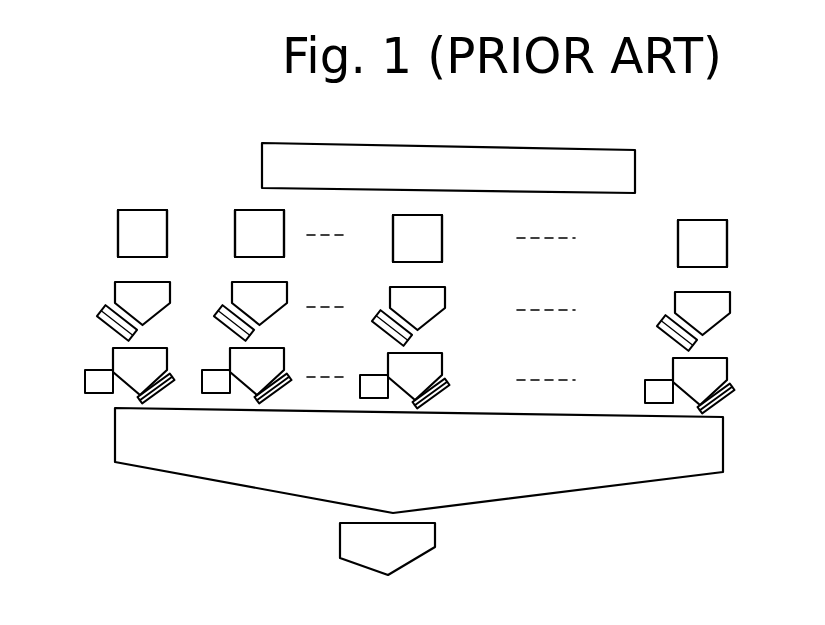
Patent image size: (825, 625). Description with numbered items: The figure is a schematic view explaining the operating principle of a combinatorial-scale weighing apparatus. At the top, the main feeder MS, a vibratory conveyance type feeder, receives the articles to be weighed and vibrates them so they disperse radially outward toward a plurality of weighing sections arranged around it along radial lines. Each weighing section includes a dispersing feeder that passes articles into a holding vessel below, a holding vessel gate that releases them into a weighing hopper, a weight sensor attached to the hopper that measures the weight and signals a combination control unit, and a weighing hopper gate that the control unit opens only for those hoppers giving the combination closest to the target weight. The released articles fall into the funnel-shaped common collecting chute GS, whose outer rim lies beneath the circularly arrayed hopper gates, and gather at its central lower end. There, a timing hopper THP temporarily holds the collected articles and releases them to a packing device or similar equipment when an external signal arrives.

The main feeder MS is at (459, 150).
The collecting chute GS is at (550, 496).
The timing hopper THP is at (437, 550).